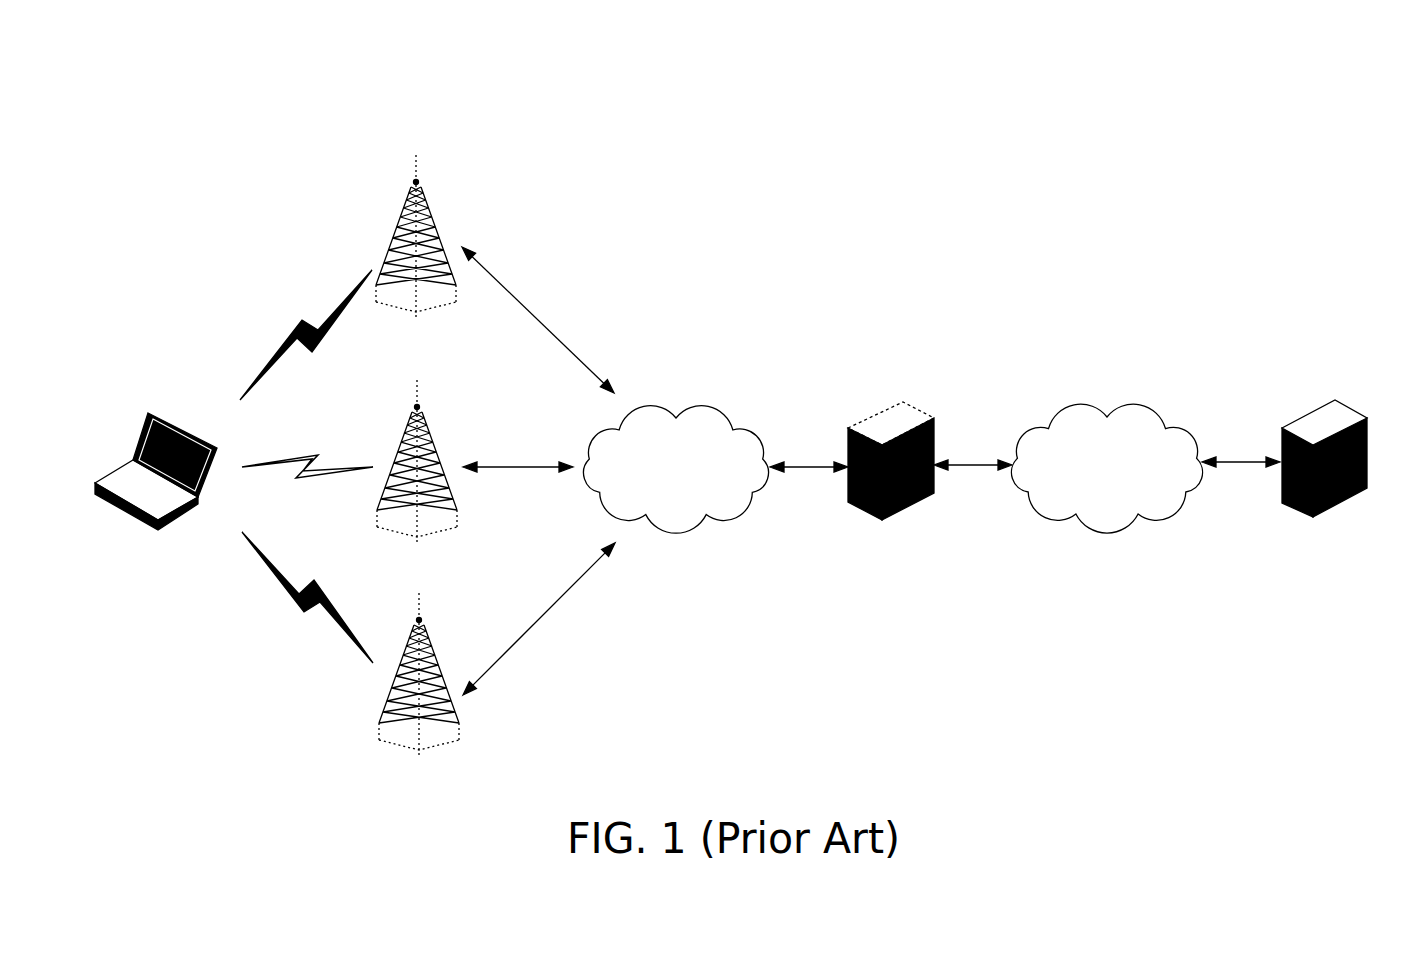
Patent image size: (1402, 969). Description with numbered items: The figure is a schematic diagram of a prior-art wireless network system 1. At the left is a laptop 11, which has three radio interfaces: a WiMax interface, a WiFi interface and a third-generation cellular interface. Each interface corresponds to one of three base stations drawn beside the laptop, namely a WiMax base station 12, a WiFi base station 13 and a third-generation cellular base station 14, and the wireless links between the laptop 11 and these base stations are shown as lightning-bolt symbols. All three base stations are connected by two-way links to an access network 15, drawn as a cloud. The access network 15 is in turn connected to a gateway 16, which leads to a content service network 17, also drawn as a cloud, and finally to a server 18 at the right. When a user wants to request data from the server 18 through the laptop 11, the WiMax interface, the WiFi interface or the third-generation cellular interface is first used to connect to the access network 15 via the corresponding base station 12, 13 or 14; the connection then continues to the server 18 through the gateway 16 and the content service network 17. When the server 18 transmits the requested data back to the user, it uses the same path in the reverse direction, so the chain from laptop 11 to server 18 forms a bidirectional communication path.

The wireless network system 1 is at (710, 62).
The laptop 11 is at (150, 412).
The WiMax base station 12 is at (412, 189).
The WiFi base station 13 is at (412, 414).
The 3G base station 14 is at (414, 626).
The access network 15 is at (735, 410).
The gateway 16 is at (893, 402).
The content service network 17 is at (1130, 408).
The server 18 is at (1312, 400).